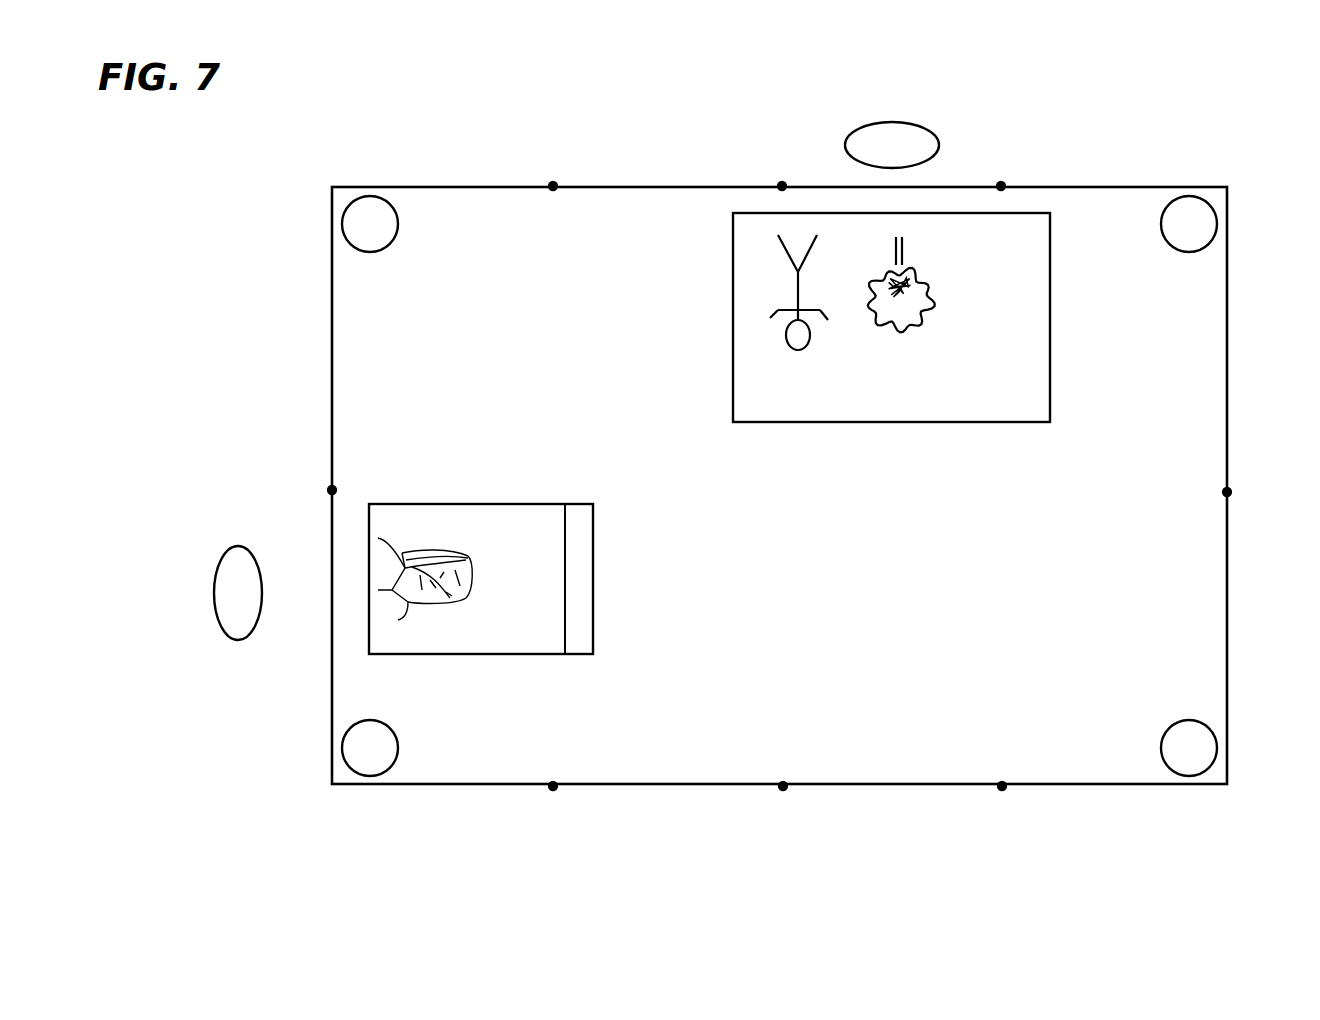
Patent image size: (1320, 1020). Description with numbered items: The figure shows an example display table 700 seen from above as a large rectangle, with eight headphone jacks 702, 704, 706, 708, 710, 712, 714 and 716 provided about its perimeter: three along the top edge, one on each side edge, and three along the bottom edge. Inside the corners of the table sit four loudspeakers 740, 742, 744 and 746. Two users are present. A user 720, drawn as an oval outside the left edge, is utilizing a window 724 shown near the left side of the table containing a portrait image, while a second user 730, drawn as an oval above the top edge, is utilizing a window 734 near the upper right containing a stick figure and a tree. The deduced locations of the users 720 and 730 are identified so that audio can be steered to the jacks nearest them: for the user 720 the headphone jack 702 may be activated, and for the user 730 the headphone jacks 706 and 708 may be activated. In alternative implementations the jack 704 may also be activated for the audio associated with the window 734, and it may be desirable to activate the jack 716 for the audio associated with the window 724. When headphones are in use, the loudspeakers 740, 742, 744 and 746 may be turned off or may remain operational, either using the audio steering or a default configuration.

The display table 700 is at (816, 747).
The headphone jack 702 is at (332, 490).
The headphone jack 704 is at (553, 186).
The headphone jack 706 is at (782, 186).
The headphone jack 708 is at (1001, 186).
The headphone jack 710 is at (1227, 492).
The headphone jack 712 is at (1002, 786).
The headphone jack 714 is at (783, 786).
The headphone jack 716 is at (553, 786).
The user 720 is at (238, 548).
The window 724 is at (482, 504).
The user 730 is at (908, 122).
The window 734 is at (968, 422).
The loudspeaker 740 is at (368, 252).
The loudspeaker 742 is at (1188, 252).
The loudspeaker 744 is at (1188, 722).
The loudspeaker 746 is at (369, 720).